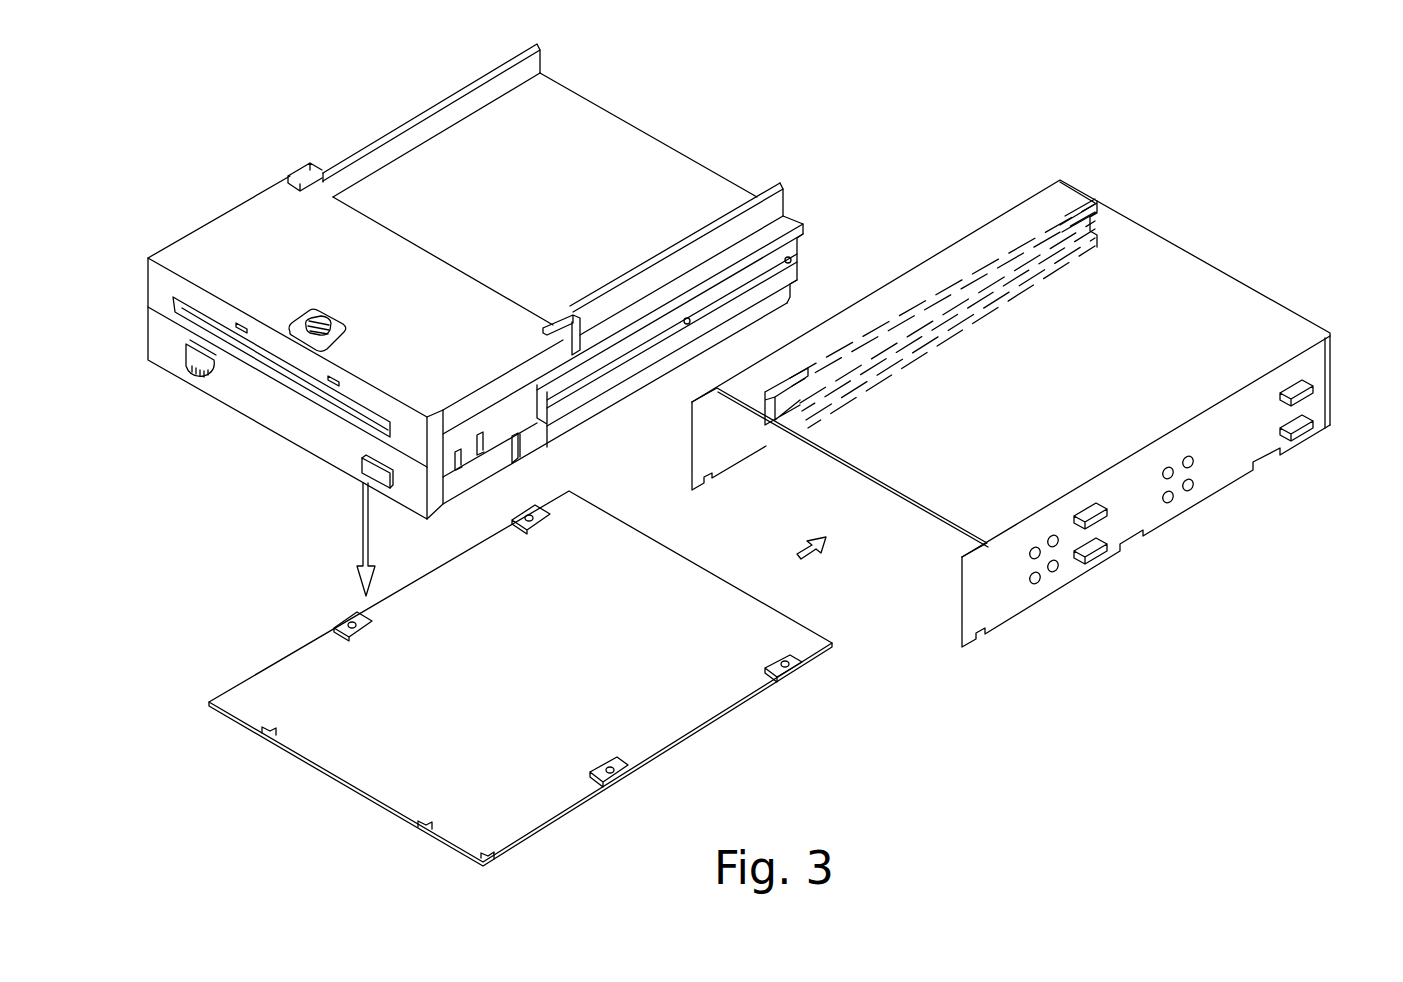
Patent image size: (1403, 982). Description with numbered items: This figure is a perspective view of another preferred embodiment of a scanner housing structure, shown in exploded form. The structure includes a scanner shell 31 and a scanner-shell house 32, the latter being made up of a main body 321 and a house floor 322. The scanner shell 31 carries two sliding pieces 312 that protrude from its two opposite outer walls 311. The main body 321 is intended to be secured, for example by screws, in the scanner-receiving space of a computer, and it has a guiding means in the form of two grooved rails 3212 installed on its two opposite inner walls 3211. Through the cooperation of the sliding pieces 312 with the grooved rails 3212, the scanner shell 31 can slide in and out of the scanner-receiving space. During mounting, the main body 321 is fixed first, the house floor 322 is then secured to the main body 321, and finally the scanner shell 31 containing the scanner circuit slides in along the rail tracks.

The scanner shell 31 is at (577, 133).
The outer wall 311 is at (797, 325).
The sliding piece 312 is at (773, 307).
The scanner-shell house 32 is at (917, 662).
The main body 321 is at (1183, 288).
The inner wall 3211 is at (1032, 207).
The grooved rail 3212 is at (1080, 210).
The house floor 322 is at (680, 723).